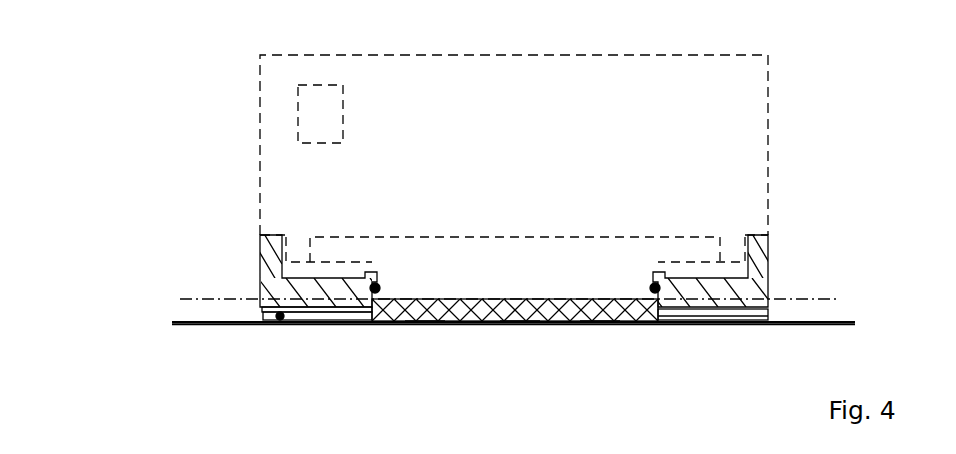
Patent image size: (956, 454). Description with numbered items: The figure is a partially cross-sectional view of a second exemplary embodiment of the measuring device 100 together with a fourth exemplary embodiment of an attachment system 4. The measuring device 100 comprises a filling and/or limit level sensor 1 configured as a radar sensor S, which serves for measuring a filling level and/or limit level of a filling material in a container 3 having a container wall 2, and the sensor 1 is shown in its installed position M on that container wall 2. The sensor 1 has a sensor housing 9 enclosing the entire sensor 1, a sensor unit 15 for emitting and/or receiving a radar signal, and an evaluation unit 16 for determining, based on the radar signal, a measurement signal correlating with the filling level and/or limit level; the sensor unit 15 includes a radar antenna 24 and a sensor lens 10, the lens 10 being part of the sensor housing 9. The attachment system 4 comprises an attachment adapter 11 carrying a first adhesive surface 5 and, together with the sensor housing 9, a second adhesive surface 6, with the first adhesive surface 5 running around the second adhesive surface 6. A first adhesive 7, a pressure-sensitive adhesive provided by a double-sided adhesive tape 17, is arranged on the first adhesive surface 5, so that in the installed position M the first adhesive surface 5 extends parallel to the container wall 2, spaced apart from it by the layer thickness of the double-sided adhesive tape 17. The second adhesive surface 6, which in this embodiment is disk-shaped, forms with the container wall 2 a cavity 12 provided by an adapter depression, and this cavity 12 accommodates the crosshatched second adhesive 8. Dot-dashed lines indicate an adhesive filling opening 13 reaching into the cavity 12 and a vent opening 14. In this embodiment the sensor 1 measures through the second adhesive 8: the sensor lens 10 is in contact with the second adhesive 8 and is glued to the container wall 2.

The measuring device 100 is at (812, 64).
The filling and/or limit level sensor 1 is at (792, 110).
The installed position M is at (237, 163).
The radar sensor S is at (758, 168).
The evaluation unit 16 is at (318, 117).
The sensor unit 15 is at (490, 236).
The sensor housing 9 is at (258, 203).
The attachment adapter 11 is at (268, 278).
The vent opening 14 is at (775, 298).
The attachment system 4 is at (812, 222).
The adhesive filling opening 13 is at (217, 300).
The radar antenna 24 is at (430, 255).
The second adhesive 8 is at (402, 315).
The cavity 12 is at (420, 312).
The sensor lens 10 is at (508, 292).
The second adhesive surface 6 is at (593, 300).
The first adhesive 7 is at (358, 317).
The first adhesive surface 5 is at (282, 325).
The double-sided adhesive tape 17 is at (718, 325).
The container wall 2 is at (190, 325).
The container 3 is at (228, 325).